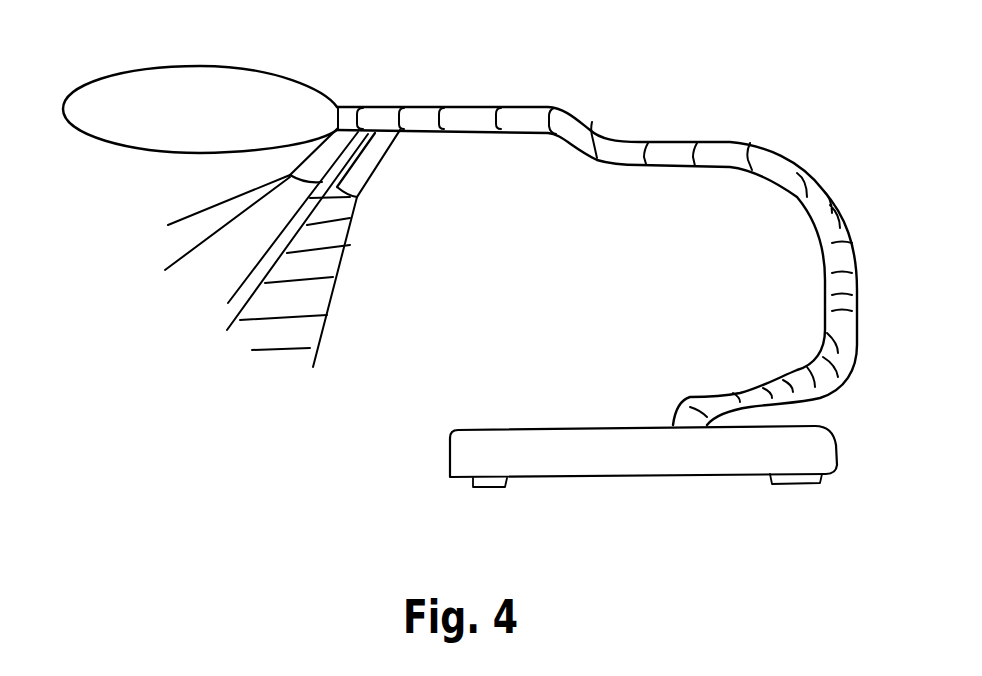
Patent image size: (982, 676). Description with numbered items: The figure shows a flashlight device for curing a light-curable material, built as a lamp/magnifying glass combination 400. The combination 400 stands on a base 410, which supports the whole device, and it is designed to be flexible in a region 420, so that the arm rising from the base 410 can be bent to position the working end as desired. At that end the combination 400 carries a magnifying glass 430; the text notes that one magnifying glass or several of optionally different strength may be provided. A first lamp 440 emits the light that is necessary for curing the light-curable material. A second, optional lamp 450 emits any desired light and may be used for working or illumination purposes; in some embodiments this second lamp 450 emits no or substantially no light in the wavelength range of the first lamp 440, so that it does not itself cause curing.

The lamp/magnifying glass combination 400 is at (567, 242).
The base 410 is at (473, 452).
The flexible region 420 is at (620, 148).
The magnifying glass 430 is at (83, 128).
The first lamp 440 is at (168, 225).
The second lamp 450 is at (363, 170).